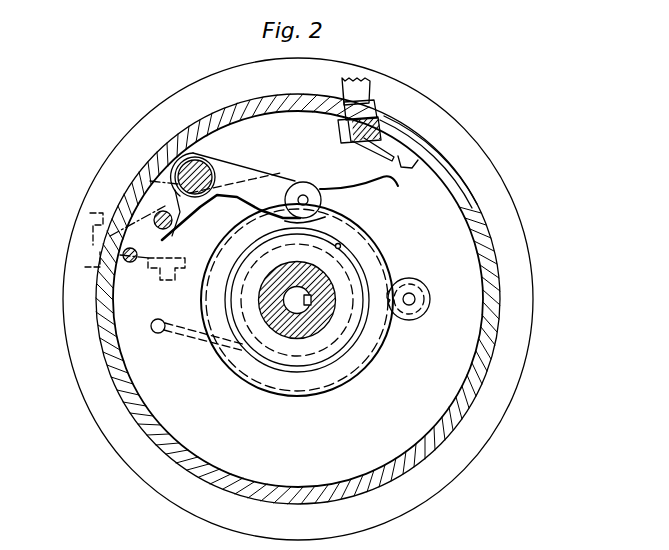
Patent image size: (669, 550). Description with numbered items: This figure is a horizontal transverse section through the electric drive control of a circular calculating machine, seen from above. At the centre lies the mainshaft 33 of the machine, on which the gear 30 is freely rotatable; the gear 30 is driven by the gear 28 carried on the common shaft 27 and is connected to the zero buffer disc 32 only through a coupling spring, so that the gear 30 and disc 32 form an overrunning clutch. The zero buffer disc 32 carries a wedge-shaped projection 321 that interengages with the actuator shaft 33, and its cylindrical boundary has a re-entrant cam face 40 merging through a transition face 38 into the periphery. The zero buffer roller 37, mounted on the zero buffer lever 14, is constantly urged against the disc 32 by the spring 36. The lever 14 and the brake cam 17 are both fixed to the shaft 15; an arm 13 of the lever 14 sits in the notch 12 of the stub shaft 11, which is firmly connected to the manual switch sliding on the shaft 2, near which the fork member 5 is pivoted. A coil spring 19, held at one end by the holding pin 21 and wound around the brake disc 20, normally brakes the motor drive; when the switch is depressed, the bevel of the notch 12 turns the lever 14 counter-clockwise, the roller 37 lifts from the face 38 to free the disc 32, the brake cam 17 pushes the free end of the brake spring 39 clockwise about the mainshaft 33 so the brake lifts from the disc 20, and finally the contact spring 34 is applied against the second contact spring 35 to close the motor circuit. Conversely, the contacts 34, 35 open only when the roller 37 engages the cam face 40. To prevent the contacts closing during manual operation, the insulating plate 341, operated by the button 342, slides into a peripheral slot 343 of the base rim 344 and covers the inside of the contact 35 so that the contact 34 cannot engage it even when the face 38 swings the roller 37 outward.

The shaft 2 is at (100, 256).
The fork member 5 is at (178, 272).
The stub shaft 11 is at (150, 217).
The notch 12 is at (93, 213).
The arm 13 is at (160, 245).
The zero buffer lever 14 is at (228, 166).
The shaft 15 is at (177, 175).
The brake cam 17 is at (207, 225).
The coil spring 19 is at (203, 342).
The brake disc 20 is at (270, 345).
The holding pin 21 is at (158, 333).
The common shaft 27 is at (411, 298).
The gear 28 is at (415, 311).
The gear 30 is at (368, 347).
The zero buffer disc 32 is at (327, 375).
The mainshaft 33 is at (292, 308).
The contact spring 34 is at (400, 186).
The contact spring 35 is at (410, 166).
The spring 36 is at (178, 165).
The zero buffer roller 37 is at (311, 181).
The transition face 38 is at (312, 218).
The brake spring 39 is at (265, 228).
The re-entrant cam face 40 is at (341, 247).
The wedge-shaped projection 321 is at (307, 301).
The insulating plate 341 is at (367, 157).
The button 342 is at (368, 93).
The peripheral slot 343 is at (377, 118).
The base rim 344 is at (480, 224).